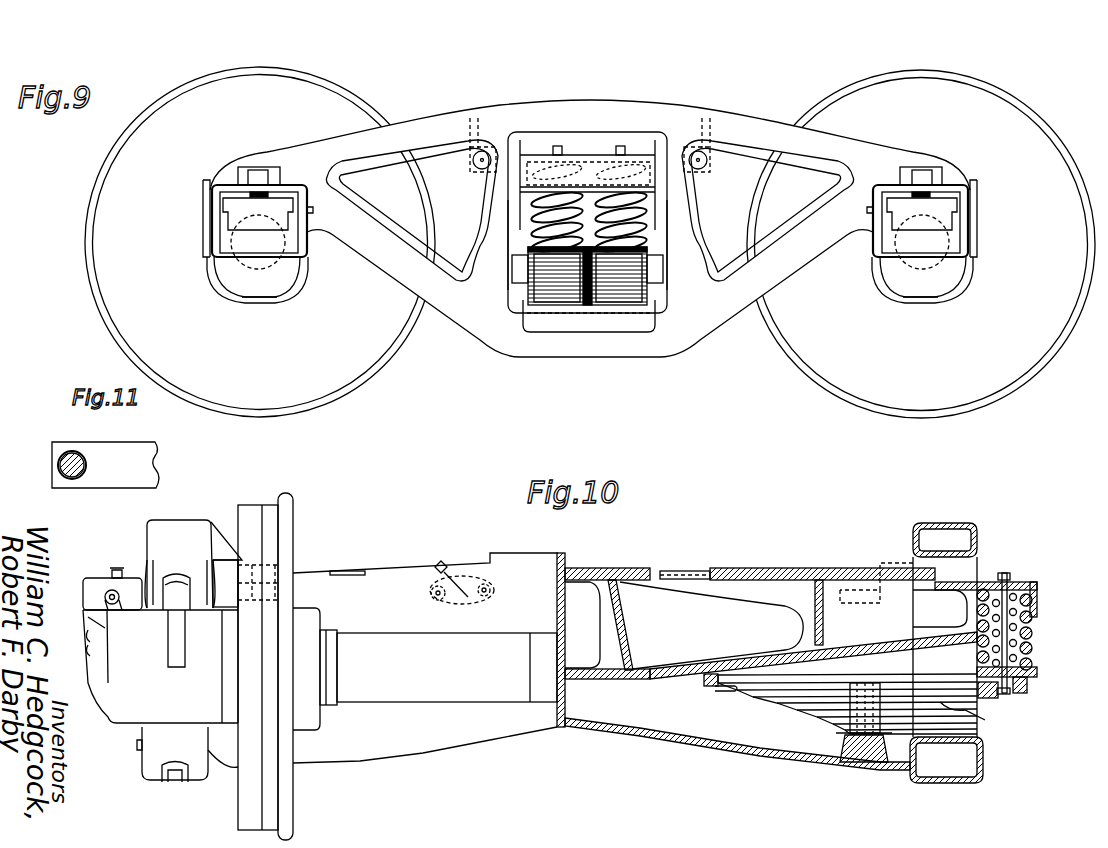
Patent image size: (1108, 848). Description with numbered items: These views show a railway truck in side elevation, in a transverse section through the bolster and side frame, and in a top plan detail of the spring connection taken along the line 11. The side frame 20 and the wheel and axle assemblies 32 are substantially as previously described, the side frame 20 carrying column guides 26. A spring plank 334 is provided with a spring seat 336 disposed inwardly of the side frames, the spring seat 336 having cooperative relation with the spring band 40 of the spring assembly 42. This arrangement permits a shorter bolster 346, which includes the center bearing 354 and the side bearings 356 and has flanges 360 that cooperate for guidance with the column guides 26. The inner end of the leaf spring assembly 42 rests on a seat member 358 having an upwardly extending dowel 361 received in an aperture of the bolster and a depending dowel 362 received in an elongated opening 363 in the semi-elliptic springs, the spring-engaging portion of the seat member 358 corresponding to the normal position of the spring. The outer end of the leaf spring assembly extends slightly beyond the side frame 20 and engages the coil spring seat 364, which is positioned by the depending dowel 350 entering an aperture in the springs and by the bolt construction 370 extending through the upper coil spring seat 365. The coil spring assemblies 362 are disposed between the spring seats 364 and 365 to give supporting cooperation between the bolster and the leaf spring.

In FIG. 9, the side frame 20 is at (575, 108).
In FIG. 10, the side frame 20 is at (942, 522).
In FIG. 9, the wheel and axle assemblies 32 is at (165, 120).
In FIG. 10, the wheel and axle assemblies 32 is at (258, 512).
In FIG. 9, the column guides 26 is at (662, 212).
In FIG. 9, the leaf spring assembly 42 is at (612, 290).
In FIG. 11, the leaf spring assembly 42 is at (143, 452).
In FIG. 10, the leaf spring assembly 42 is at (965, 710).
In FIG. 9, the flanges 360 is at (665, 150).
In FIG. 9, the depending dowel / coil spring assemblies 362 is at (506, 206).
In FIG. 11, the depending dowel / coil spring assemblies 362 is at (74, 454).
In FIG. 10, the depending dowel / coil spring assemblies 362 is at (1034, 632).
In FIG. 11, the elongated opening 363 is at (82, 474).
In FIG. 10, the elongated opening 363 is at (730, 692).
In FIG. 10, the spring plank 334 is at (668, 742).
In FIG. 10, the spring seat 336 is at (865, 755).
In FIG. 10, the bolster 346 is at (660, 605).
In FIG. 10, the depending dowel 350 is at (1022, 692).
In FIG. 10, the center bearing 354 is at (628, 568).
In FIG. 10, the side bearings 356 is at (793, 568).
In FIG. 10, the seat member 358 is at (740, 675).
In FIG. 10, the upwardly extending dowel 361 is at (712, 672).
In FIG. 10, the coil spring seat 364 is at (1037, 672).
In FIG. 10, the coil spring seat 365 is at (1038, 588).
In FIG. 10, the bolt construction 370 is at (1008, 575).
In FIG. 10, the spring band 40 is at (866, 690).
In FIG. 10, the line 11— 11 is at (696, 660).